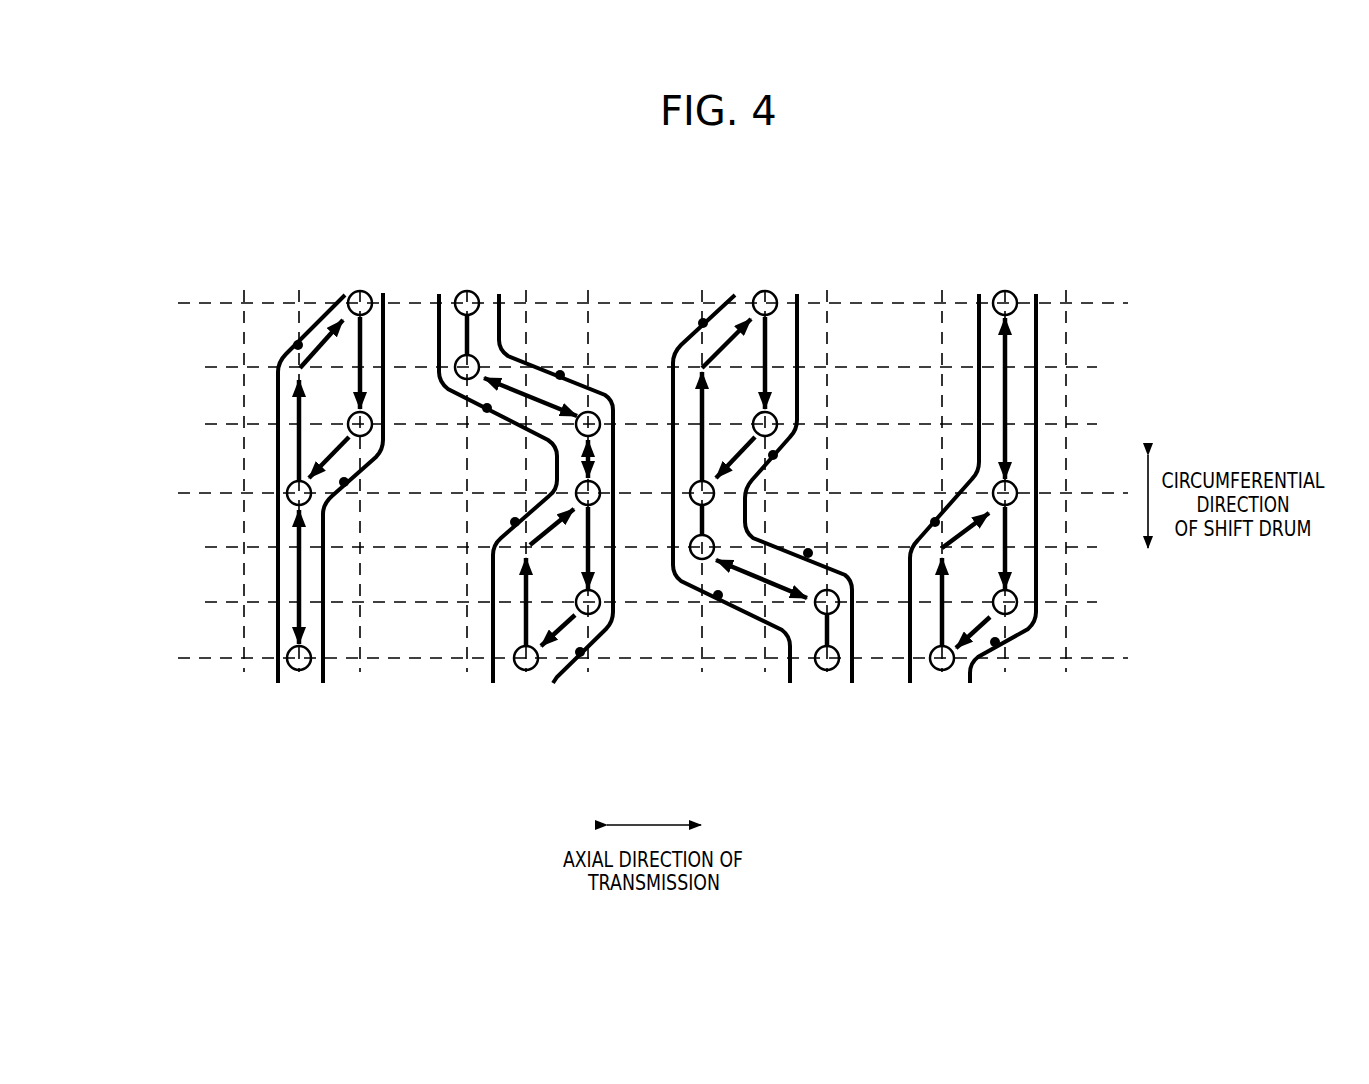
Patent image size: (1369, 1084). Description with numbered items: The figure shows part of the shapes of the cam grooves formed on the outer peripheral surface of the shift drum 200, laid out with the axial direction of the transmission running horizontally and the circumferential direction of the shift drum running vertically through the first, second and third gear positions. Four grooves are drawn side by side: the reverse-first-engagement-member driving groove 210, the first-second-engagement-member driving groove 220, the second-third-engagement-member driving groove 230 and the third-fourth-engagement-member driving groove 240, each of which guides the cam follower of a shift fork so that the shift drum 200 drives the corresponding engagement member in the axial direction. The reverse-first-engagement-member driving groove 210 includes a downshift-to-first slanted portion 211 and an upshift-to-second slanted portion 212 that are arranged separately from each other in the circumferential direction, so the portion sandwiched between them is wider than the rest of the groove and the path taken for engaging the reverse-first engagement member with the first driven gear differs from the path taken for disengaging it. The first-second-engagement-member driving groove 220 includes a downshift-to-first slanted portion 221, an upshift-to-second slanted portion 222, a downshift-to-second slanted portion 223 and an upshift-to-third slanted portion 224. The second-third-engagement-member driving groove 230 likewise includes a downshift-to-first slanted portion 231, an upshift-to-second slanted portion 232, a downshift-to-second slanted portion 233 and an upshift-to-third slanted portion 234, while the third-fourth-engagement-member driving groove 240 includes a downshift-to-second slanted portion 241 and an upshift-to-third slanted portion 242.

The shift drum 200 is at (1022, 216).
The reverse-first-engagement-member driving groove 210 is at (291, 702).
The downshift-to-first slanted portion 211 is at (298, 345).
The upshift-to-second slanted portion 212 is at (344, 482).
The first-second-engagement-member driving groove 220 is at (500, 703).
The downshift-to-first slanted portion 221 is at (560, 375).
The upshift-to-second slanted portion 222 is at (487, 408).
The downshift-to-second slanted portion 223 is at (515, 522).
The upshift-to-third slanted portion 224 is at (580, 652).
The second-third-engagement-member driving groove 230 is at (717, 706).
The downshift-to-first slanted portion 231 is at (703, 323).
The upshift-to-second slanted portion 232 is at (773, 455).
The downshift-to-second slanted portion 233 is at (808, 553).
The upshift-to-third slanted portion 234 is at (718, 595).
The third-fourth-engagement-member driving groove 240 is at (966, 706).
The downshift-to-second slanted portion 241 is at (935, 522).
The upshift-to-third slanted portion 242 is at (995, 642).